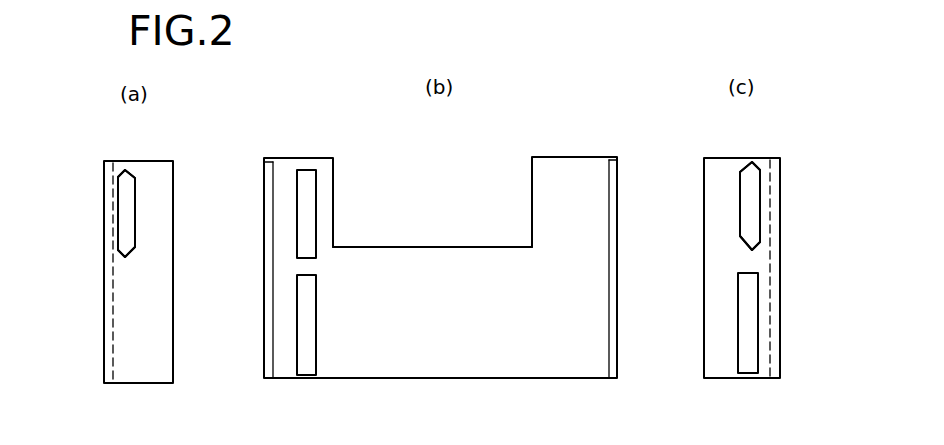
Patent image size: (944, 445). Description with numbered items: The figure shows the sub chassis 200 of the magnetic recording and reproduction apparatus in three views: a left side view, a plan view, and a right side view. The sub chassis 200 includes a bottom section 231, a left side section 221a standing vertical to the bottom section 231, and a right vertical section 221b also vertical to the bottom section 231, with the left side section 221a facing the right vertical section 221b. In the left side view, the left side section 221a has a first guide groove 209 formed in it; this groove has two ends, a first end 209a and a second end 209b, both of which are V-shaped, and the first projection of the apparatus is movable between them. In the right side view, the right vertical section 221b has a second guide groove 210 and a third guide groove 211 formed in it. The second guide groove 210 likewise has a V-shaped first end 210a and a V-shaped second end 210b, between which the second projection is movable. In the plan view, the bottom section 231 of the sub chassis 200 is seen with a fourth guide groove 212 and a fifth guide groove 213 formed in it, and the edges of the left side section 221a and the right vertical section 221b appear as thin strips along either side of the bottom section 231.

The sub chassis 200 is at (610, 72).
The first guide groove 209 is at (123, 212).
The first end 209a is at (125, 172).
The second end 209b is at (115, 264).
The second guide groove 210 is at (753, 208).
The first end 210a is at (752, 164).
The second end 210b is at (758, 245).
The third guide groove 211 is at (750, 320).
The fourth guide groove 212 is at (300, 203).
The fifth guide groove 213 is at (304, 320).
The left side section 221a is at (250, 377).
The right vertical section 221b is at (708, 367).
The bottom section 231 is at (372, 258).